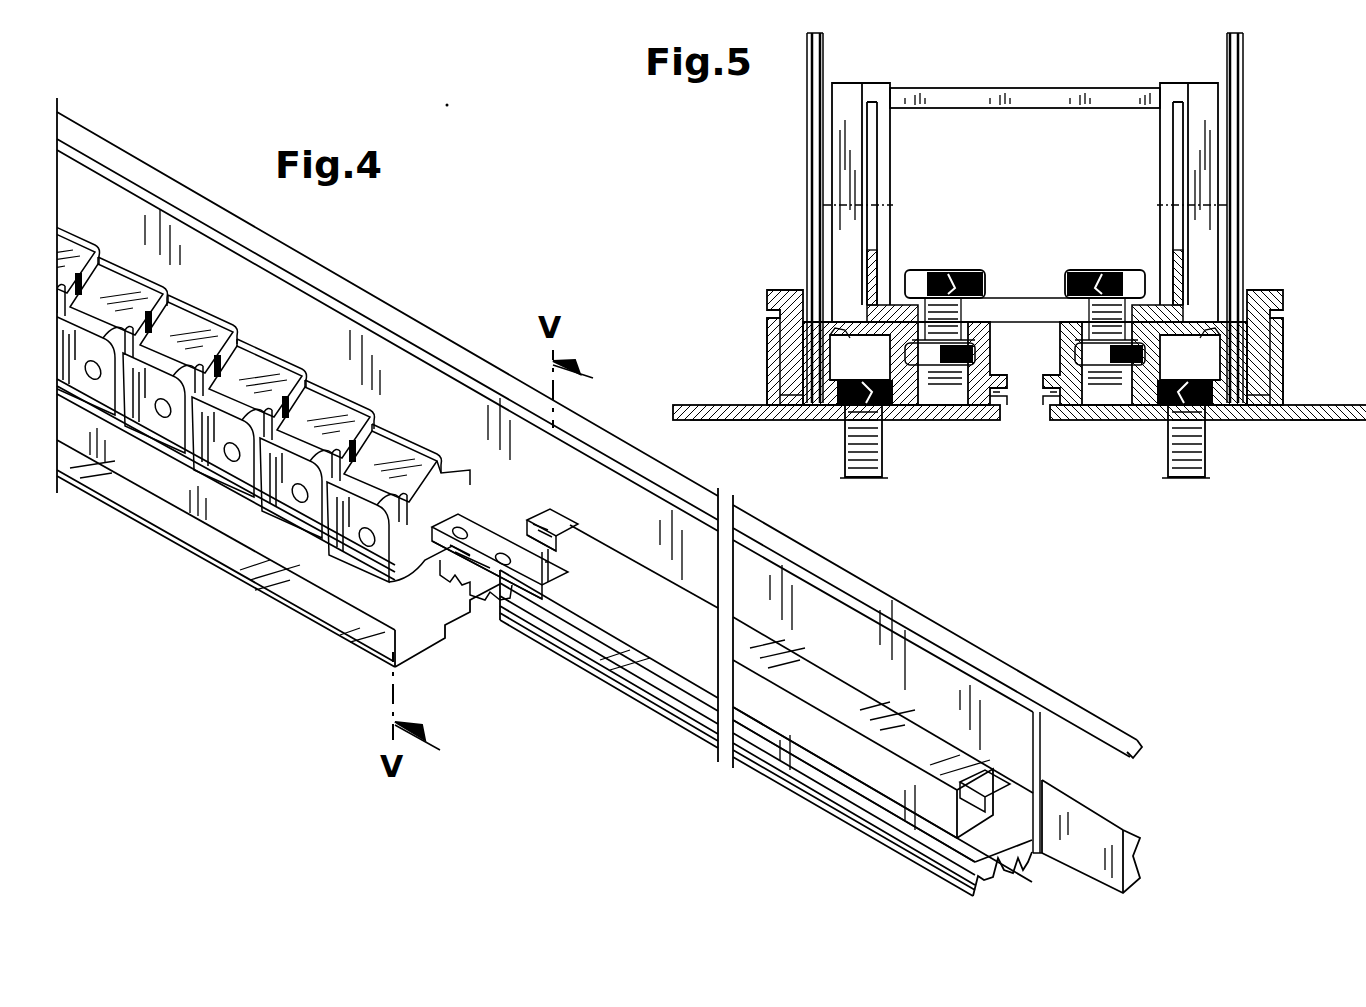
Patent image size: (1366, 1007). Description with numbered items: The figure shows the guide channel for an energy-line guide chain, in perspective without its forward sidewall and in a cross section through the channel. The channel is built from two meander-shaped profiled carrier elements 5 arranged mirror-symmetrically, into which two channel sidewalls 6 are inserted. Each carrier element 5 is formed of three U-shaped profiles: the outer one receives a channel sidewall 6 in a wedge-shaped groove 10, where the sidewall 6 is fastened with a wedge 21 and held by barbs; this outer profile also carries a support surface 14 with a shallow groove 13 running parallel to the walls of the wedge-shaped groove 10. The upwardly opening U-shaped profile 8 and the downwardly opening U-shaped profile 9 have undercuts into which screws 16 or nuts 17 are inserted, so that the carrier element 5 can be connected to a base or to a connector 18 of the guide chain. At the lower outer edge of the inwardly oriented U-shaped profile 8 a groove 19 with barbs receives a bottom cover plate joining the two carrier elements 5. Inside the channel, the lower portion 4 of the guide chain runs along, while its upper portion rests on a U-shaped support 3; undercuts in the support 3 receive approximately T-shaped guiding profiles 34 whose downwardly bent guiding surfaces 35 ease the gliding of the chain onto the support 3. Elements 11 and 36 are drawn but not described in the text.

In FIG. 4, the support 3 is at (917, 792).
In FIG. 4, the lower portion 4 is at (278, 496).
In FIG. 5, the lower portion 4 is at (980, 98).
In FIG. 4, the profiled carrier element 5 is at (318, 630).
In FIG. 5, the profiled carrier element 5 is at (1019, 381).
In FIG. 4, the channel sidewall 6 is at (272, 312).
In FIG. 5, the channel sidewall 6 is at (808, 155).
In FIG. 5, the U-shaped profile 8 is at (927, 395).
In FIG. 5, the U-shaped profile 9 is at (893, 268).
In FIG. 5, the wedge-shaped groove 10 is at (795, 406).
In FIG. 5, the side wall 11 is at (767, 380).
In FIG. 5, the shallow groove 13 is at (718, 404).
In FIG. 5, the support surface 14 is at (733, 421).
In FIG. 5, the screw 16 is at (866, 480).
In FIG. 5, the nut 17 is at (950, 370).
In FIG. 4, the connector 18 is at (430, 580).
In FIG. 5, the groove 19 is at (1003, 408).
In FIG. 4, the wedge 21 is at (1128, 834).
In FIG. 5, the wedge 21 is at (767, 292).
In FIG. 4, the guiding profile 34 is at (546, 574).
In FIG. 4, the guiding surface 35 is at (537, 522).
In FIG. 4, the bar 36 is at (903, 736).